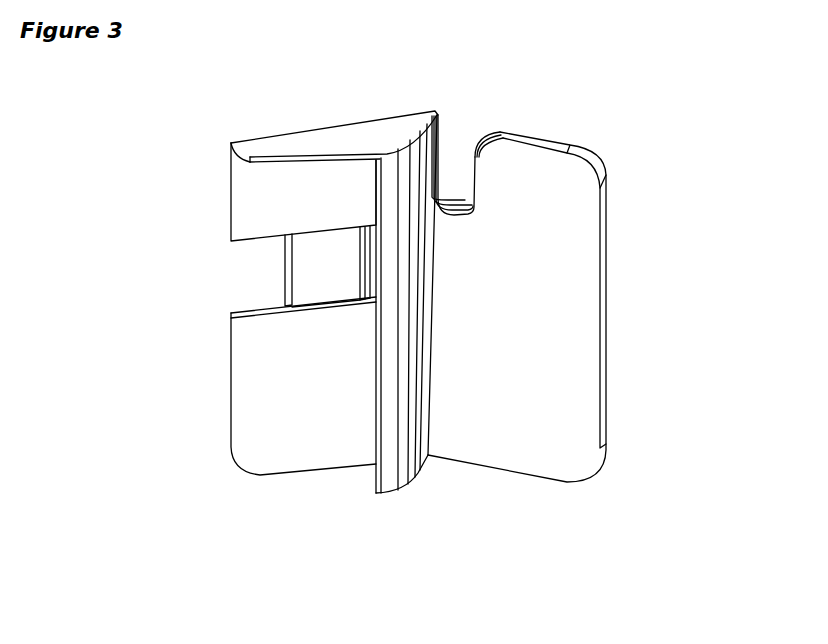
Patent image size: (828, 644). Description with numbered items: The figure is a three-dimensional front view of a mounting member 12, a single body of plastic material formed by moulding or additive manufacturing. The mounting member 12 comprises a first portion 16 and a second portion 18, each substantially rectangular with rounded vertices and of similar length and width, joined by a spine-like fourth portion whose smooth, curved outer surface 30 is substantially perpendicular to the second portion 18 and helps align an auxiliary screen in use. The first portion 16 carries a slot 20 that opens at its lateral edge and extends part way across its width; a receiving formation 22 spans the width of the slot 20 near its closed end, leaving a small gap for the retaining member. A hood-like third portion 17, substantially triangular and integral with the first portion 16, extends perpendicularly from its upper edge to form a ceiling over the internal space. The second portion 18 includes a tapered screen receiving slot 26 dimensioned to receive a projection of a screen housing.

The mounting member 12 is at (436, 304).
The first portion 16 is at (265, 434).
The third portion 17 is at (333, 136).
The second portion 18 is at (557, 360).
The slot 20 is at (255, 301).
The receiving formation 22 is at (312, 285).
The screen receiving slot 26 is at (454, 165).
The outer surface 30 is at (423, 378).